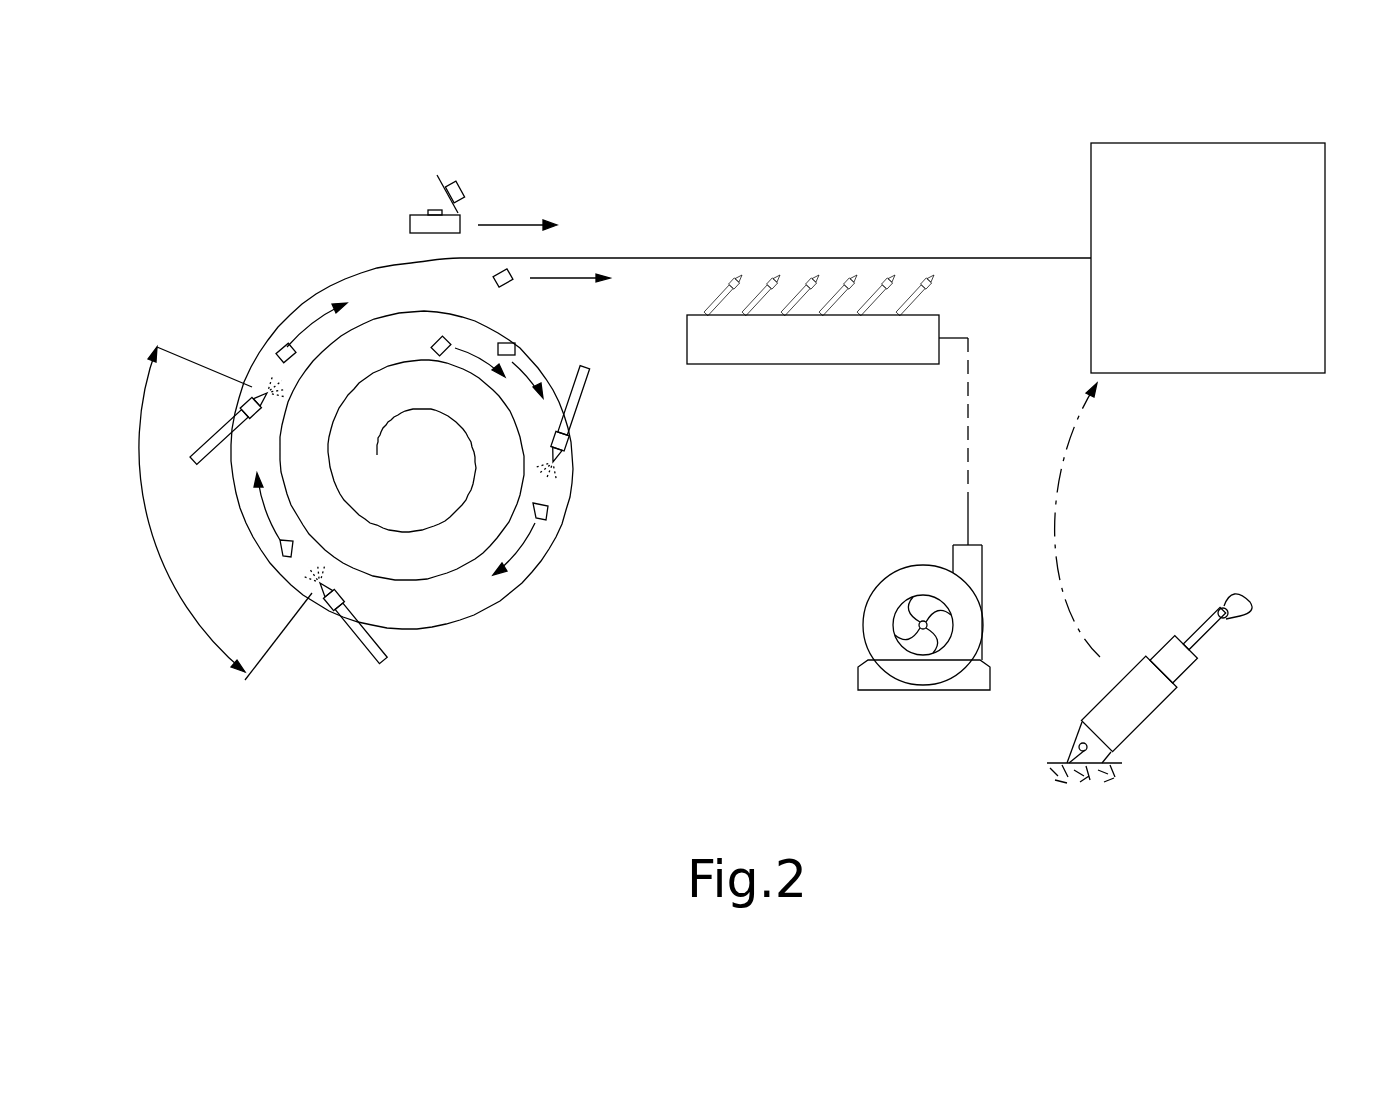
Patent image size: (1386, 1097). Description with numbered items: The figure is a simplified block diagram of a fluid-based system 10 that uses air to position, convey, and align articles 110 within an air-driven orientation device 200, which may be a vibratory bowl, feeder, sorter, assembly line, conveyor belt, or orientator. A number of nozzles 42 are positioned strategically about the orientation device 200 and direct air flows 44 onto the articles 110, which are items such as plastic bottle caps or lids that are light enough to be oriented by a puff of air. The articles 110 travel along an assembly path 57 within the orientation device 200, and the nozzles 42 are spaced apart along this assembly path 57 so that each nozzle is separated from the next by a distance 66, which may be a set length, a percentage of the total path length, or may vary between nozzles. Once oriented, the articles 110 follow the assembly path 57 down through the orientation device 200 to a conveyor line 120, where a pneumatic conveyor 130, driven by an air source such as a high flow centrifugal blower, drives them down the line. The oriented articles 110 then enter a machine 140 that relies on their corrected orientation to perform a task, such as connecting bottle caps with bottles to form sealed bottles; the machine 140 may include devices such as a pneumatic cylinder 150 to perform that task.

The system 10 is at (292, 132).
The nozzles 42 is at (213, 460).
The air flows 44 is at (268, 377).
The assembly path 57 is at (523, 367).
The distance 66 is at (196, 627).
The articles 110 is at (465, 188).
The conveyor line 120 is at (368, 265).
The pneumatic conveyor 130 is at (873, 350).
The machine 140 is at (1146, 142).
The pneumatic cylinder 150 is at (1145, 705).
The air-driven orientation device 200 is at (502, 593).